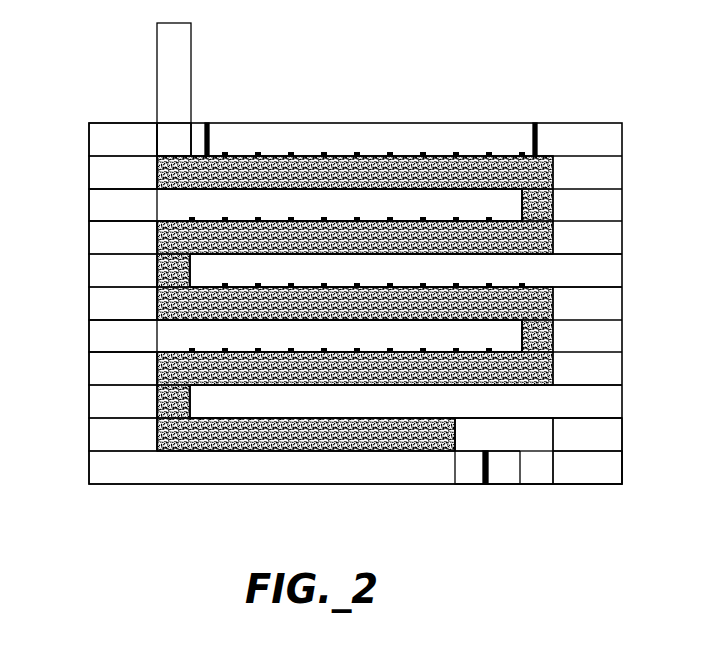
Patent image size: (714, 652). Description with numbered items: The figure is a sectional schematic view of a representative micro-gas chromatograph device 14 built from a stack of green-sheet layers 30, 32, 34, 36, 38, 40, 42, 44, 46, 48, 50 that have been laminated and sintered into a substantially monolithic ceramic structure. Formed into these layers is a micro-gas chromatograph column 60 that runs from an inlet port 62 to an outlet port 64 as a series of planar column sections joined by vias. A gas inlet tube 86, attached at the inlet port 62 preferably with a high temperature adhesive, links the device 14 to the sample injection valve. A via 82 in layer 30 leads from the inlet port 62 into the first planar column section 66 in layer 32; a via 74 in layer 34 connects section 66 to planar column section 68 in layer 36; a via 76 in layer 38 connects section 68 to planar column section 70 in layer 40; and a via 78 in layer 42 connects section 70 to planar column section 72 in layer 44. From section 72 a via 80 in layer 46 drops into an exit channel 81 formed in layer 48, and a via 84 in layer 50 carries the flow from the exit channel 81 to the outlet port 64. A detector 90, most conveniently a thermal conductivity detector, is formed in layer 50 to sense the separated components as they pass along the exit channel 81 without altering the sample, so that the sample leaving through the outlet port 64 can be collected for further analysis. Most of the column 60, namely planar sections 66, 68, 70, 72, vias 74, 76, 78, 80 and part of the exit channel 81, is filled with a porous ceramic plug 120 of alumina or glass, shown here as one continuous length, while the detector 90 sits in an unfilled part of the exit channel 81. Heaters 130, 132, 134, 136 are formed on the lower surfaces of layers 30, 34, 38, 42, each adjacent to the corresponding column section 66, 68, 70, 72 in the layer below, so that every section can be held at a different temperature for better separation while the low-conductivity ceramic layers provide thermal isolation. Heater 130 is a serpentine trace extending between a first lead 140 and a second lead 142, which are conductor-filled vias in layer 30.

The micro-gas chromatograph device 14 is at (100, 523).
The green-sheet layer 30 is at (89, 140).
The green-sheet layer 32 is at (89, 172).
The green-sheet layer 34 is at (89, 205).
The green-sheet layer 36 is at (89, 238).
The green-sheet layer 38 is at (89, 270).
The green-sheet layer 40 is at (89, 305).
The green-sheet layer 42 is at (89, 337).
The green-sheet layer 44 is at (89, 370).
The green-sheet layer 46 is at (89, 402).
The green-sheet layer 48 is at (89, 435).
The green-sheet layer 50 is at (89, 467).
The micro-gas chromatograph column 60 is at (562, 170).
The inlet port 62 is at (157, 120).
The outlet port 64 is at (540, 485).
The planar column section 66 is at (513, 155).
The planar column section 68 is at (507, 257).
The planar column section 70 is at (540, 287).
The planar column section 72 is at (507, 388).
The via 74 is at (553, 210).
The via 76 is at (157, 271).
The via 78 is at (553, 343).
The via 80 is at (157, 400).
The exit channel 81 is at (232, 452).
The via 82 is at (157, 140).
The via 84 is at (553, 472).
The gas inlet tube 86 is at (157, 64).
The detector 90 is at (474, 470).
The porous ceramic plug 120 is at (355, 452).
The heater 130 is at (224, 152).
The heater 132 is at (258, 217).
The heater 134 is at (359, 284).
The heater 136 is at (456, 349).
The first lead 140 is at (208, 136).
The second lead 142 is at (537, 142).